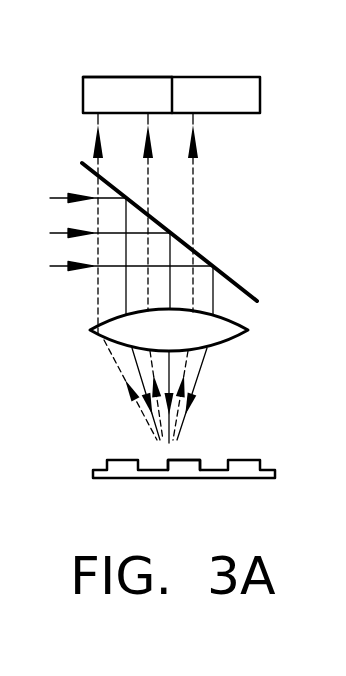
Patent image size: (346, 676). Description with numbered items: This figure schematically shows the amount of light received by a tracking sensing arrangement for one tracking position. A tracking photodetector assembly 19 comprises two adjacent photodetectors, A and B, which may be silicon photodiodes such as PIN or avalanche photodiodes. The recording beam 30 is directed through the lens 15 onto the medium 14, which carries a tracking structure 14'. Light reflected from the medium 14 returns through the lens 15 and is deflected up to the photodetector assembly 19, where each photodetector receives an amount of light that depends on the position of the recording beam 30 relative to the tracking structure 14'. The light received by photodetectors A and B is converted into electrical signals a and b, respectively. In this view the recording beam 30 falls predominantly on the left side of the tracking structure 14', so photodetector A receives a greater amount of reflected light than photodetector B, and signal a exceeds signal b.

The tracking photodetector assembly 19 is at (205, 83).
The electrical signal a is at (112, 77).
The electrical signal b is at (195, 77).
The objective lens 15 is at (102, 342).
The recording beam 30 is at (203, 368).
The medium 14 is at (208, 454).
The tracking structure 14' is at (150, 450).